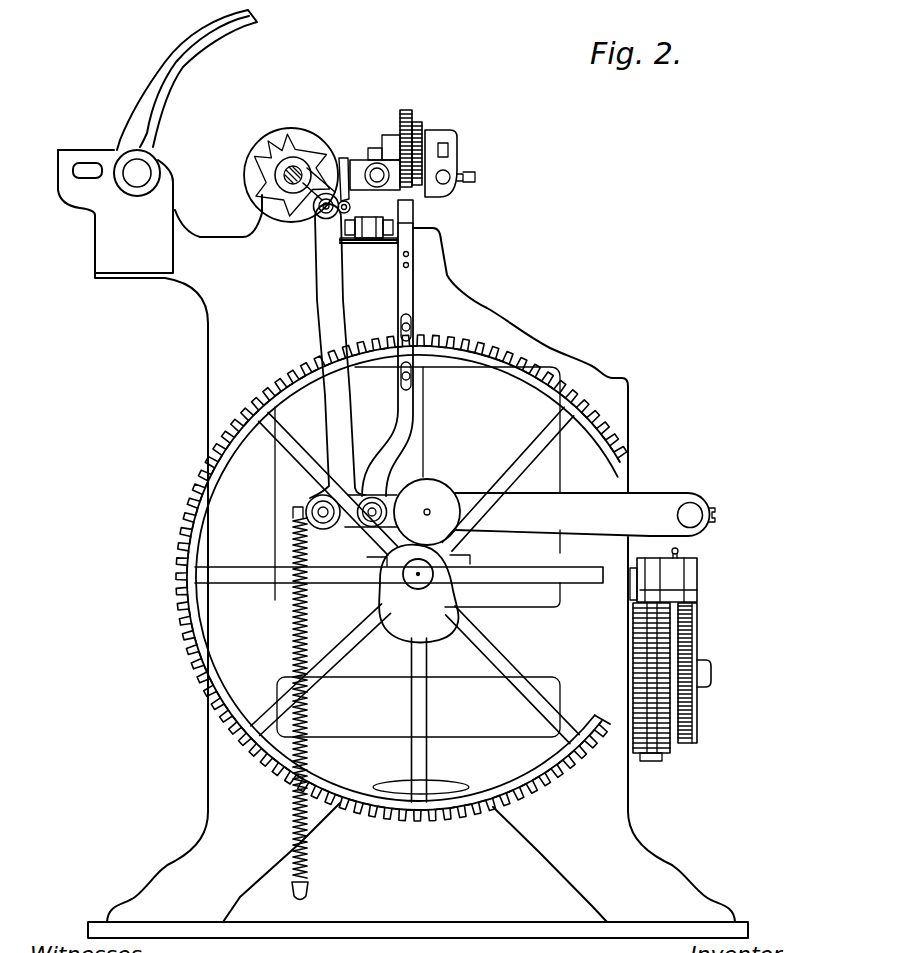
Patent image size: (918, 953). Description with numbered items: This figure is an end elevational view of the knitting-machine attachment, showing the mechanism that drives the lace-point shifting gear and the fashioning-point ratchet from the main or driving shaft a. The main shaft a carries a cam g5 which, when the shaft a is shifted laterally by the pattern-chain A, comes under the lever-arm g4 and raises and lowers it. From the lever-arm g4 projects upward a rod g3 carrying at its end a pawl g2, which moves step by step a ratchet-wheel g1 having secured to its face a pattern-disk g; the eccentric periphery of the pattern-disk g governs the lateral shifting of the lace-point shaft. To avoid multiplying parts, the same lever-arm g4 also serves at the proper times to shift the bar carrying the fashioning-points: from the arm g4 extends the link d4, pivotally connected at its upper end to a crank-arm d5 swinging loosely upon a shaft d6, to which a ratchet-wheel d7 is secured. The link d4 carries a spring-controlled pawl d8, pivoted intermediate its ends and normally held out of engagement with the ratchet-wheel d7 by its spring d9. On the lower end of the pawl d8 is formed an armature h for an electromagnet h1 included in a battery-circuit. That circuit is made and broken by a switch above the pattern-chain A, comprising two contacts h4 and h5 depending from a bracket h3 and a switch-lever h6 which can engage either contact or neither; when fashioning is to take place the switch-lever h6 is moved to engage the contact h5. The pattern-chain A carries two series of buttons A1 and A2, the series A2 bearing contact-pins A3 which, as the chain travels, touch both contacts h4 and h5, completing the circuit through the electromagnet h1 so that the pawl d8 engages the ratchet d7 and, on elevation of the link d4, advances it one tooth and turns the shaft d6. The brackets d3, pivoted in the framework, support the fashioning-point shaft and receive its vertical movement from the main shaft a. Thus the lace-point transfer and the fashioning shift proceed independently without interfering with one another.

The main or driving shaft a is at (425, 573).
The bracket d3 is at (170, 52).
The link d4 is at (323, 338).
The crank-arm d5 is at (300, 195).
The shaft d6 is at (277, 173).
The ratchet-wheel d7 is at (285, 137).
The spring-controlled pawl d8 is at (347, 158).
The spring d9 is at (314, 214).
The pattern-disk g is at (420, 123).
The ratchet-wheel g1 is at (406, 110).
The pawl g2 is at (407, 213).
The rod g3 is at (410, 297).
The lever-arm g4 is at (473, 492).
The cam g5 is at (405, 628).
The armature h is at (340, 238).
The electromagnet h1 is at (377, 233).
The bracket h3 is at (683, 568).
The contact h4 is at (640, 590).
The contact h5 is at (700, 591).
The switch-lever h6 is at (680, 557).
The pattern-chain A is at (667, 628).
The pattern lug or button A1 is at (665, 660).
The pattern lug or button A2 is at (660, 690).
The contact-pin A3 is at (665, 737).